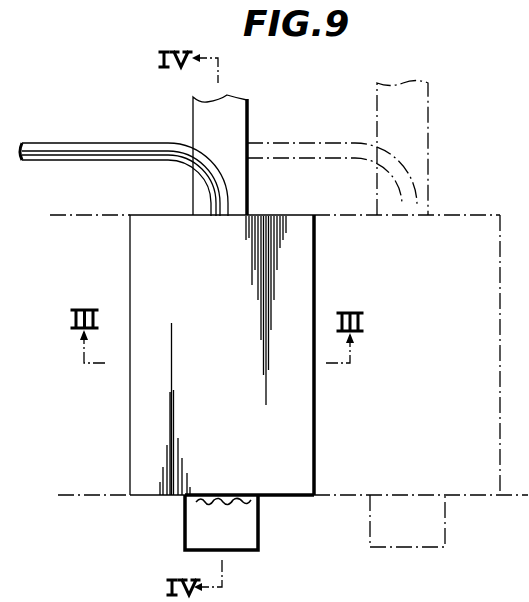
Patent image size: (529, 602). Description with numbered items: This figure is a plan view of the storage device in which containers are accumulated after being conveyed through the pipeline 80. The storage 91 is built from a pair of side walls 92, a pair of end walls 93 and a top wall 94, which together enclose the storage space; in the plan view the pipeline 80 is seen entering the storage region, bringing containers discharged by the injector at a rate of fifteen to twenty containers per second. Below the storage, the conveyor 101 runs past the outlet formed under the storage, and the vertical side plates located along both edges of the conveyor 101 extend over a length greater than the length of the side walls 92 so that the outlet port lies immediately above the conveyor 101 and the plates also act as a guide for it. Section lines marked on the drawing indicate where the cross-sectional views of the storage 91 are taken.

The pipeline 80 is at (97, 146).
The conveyor 101 is at (248, 124).
The end walls 93 is at (145, 225).
The storage 91 is at (268, 216).
The side walls 92 is at (128, 272).
The top wall 94 is at (302, 425).